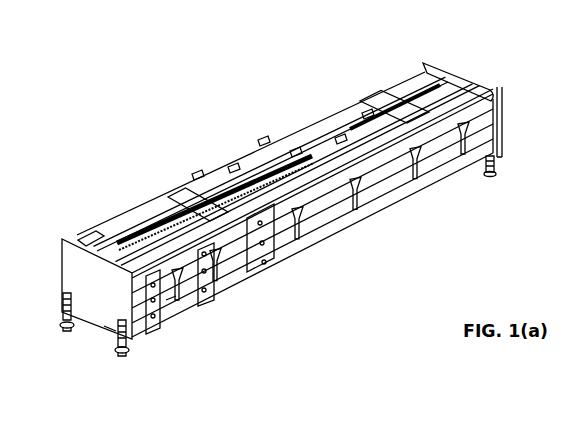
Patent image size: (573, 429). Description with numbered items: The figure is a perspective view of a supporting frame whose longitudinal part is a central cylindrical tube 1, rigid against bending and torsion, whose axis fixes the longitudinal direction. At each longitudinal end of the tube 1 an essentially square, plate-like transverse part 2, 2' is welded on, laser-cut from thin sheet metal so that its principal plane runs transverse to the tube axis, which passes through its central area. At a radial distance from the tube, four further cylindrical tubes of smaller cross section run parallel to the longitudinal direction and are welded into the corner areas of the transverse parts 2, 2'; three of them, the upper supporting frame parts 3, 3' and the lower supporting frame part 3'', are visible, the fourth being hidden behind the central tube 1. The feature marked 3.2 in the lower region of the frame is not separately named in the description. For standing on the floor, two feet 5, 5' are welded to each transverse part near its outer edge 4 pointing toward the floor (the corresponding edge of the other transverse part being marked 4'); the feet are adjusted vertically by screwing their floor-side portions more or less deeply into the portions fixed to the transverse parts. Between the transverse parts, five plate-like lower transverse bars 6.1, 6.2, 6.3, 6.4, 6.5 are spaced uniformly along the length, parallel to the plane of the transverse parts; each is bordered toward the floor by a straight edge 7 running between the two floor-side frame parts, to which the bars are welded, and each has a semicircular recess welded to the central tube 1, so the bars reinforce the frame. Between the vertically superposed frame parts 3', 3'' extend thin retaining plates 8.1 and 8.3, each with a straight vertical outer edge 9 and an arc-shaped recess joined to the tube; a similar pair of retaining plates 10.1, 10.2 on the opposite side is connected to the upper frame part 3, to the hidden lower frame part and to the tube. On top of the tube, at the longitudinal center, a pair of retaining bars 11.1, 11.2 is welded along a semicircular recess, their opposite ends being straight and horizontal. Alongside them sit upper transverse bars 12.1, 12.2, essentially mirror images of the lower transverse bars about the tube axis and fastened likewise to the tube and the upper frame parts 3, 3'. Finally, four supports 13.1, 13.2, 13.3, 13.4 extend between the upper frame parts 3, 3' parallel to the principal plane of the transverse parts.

The central cylindrical tube 1 is at (445, 186).
The transverse part 2 is at (87, 311).
The transverse part 2' is at (497, 91).
The upper supporting frame part 3 is at (271, 164).
The upper supporting frame part 3' is at (298, 175).
The lower supporting frame part 3'' is at (312, 208).
The lower rail 3.2 is at (215, 297).
The outer edge 4 is at (99, 346).
The foot 4' is at (469, 168).
The foot 5 is at (40, 319).
The foot 5' is at (302, 278).
The lower transverse bar 6.1 is at (178, 292).
The lower transverse bar 6.2 is at (217, 280).
The lower transverse bar 6.3 is at (300, 241).
The lower transverse bar 6.4 is at (356, 211).
The lower transverse bar 6.5 is at (415, 180).
The straight edge 7 is at (171, 302).
The retaining plate 8.1 is at (155, 312).
The retaining plate 8.3 is at (277, 262).
The vertical outer edge 9 is at (229, 285).
The retaining plate 10.1 is at (197, 175).
The retaining plate 10.2 is at (262, 141).
The retaining bar 11.1 is at (233, 168).
The retaining bar 11.2 is at (295, 151).
The upper transverse bar 12.1 is at (340, 139).
The upper transverse bar 12.2 is at (367, 115).
The support 13.1 is at (86, 229).
The support 13.2 is at (200, 200).
The support 13.3 is at (427, 108).
The support 13.4 is at (451, 74).